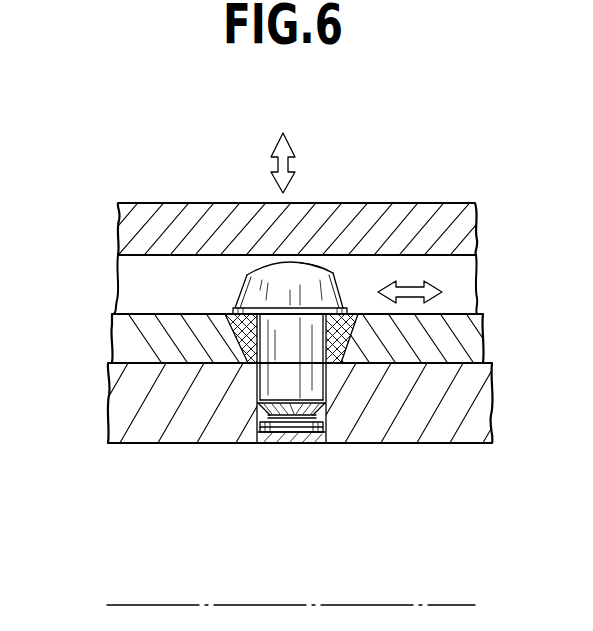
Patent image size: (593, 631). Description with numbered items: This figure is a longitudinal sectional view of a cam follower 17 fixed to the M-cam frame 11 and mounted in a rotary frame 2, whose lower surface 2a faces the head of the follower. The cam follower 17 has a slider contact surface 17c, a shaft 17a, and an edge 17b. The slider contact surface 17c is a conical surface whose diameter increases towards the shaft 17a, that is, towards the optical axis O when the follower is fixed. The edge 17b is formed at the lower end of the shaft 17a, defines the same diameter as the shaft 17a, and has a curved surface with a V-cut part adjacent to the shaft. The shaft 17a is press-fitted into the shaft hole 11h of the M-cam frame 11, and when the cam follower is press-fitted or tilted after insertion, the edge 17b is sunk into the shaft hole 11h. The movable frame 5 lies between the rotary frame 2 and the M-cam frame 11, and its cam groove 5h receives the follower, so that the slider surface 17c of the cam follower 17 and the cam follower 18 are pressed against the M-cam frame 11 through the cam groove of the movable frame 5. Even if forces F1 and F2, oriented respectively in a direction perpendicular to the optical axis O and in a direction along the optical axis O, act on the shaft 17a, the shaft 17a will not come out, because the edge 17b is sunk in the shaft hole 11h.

The first member / upper plate 2 is at (453, 220).
The lower surface of first member 2a is at (455, 268).
The movable frame 5 is at (460, 330).
The hole in second member 5h is at (350, 343).
The M-cam frame 11 is at (467, 413).
The shaft hole 11h is at (327, 410).
The cam follower 17 is at (230, 307).
The shaft 17a is at (258, 375).
The edge 17b is at (260, 427).
The slider contact surface 17c is at (243, 290).
The cam follower 18 is at (243, 333).
The force F1 is at (408, 280).
The force F2 is at (291, 162).
The optical axis O is at (440, 604).